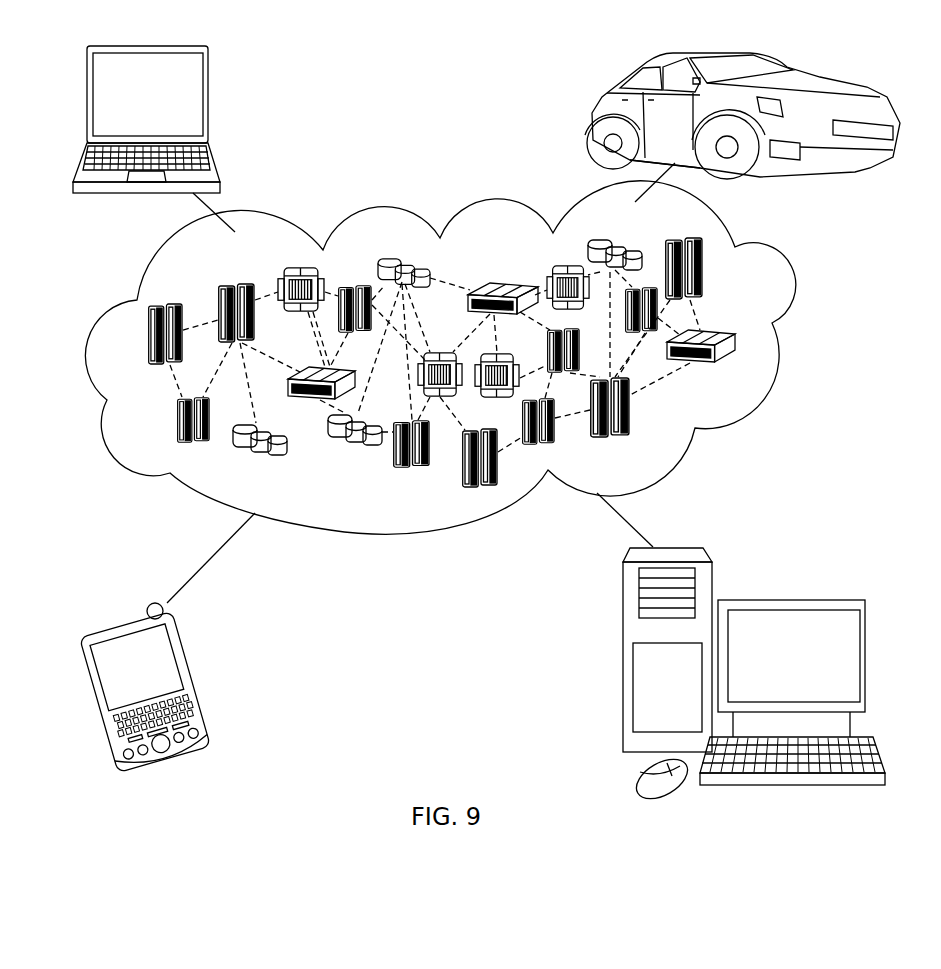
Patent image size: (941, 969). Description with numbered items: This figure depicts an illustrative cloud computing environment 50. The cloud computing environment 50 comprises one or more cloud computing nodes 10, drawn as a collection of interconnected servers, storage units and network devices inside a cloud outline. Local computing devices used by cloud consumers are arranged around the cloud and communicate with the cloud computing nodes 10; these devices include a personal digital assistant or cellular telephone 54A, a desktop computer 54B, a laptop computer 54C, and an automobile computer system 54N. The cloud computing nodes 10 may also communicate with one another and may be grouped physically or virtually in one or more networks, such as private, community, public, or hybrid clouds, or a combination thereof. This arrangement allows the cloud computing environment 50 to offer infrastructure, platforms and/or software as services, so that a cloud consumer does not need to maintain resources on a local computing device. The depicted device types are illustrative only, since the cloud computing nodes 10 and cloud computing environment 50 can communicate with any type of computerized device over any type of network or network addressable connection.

The cloud computing node 10 is at (748, 373).
The cloud computing environment 50 is at (787, 343).
The personal digital assistant or cellular telephone 54A is at (200, 680).
The desktop computer 54B is at (790, 600).
The laptop computer 54C is at (208, 102).
The automobile computer system 54N is at (595, 117).